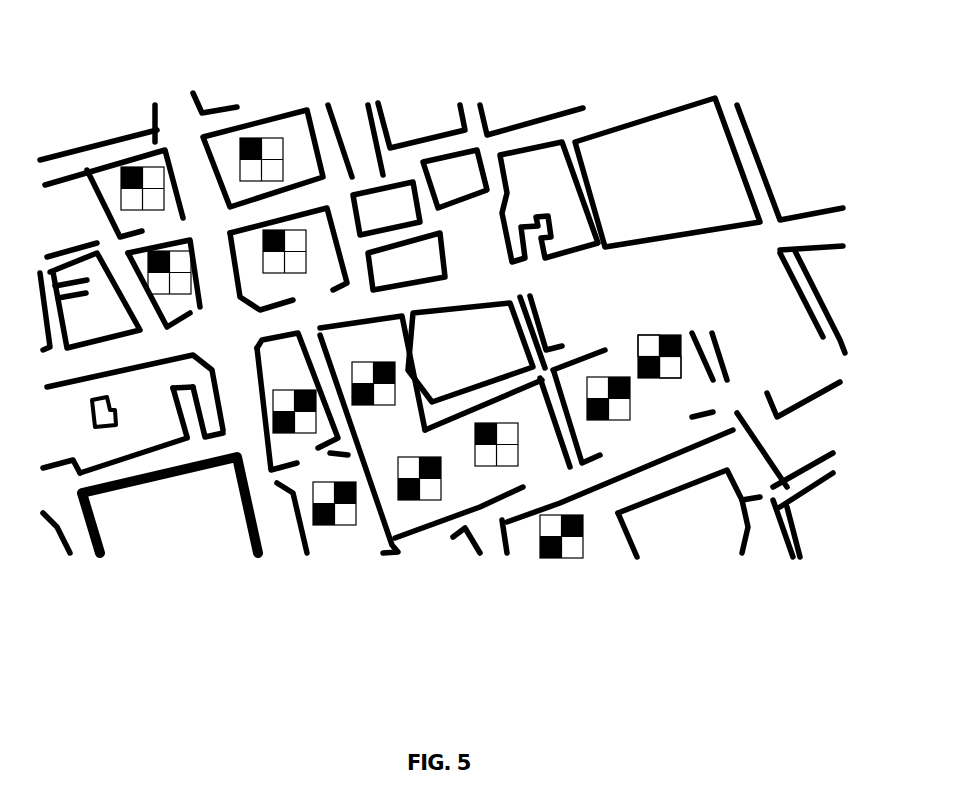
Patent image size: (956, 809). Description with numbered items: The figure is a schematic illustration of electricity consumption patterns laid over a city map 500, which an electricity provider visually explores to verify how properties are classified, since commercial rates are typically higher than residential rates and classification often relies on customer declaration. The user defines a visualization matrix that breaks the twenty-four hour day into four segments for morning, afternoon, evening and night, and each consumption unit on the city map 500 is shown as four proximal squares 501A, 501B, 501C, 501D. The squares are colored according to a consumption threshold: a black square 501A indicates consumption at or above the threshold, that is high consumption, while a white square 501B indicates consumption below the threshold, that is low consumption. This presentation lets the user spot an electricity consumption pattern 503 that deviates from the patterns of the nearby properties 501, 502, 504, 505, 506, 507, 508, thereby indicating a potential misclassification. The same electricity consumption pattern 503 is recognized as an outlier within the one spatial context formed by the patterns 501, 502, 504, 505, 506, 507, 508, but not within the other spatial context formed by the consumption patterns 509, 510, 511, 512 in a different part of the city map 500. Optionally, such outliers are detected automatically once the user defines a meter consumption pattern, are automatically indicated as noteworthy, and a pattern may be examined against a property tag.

The city map 500 is at (653, 602).
The electricity consumption pattern 501 is at (652, 371).
The black square 501A is at (716, 342).
The white square 501B is at (678, 369).
The proximal square 501C is at (640, 368).
The proximal square 501D is at (650, 340).
The electricity consumption pattern 502 is at (610, 423).
The electricity consumption pattern 503 is at (492, 463).
The electricity consumption pattern 504 is at (585, 559).
The electricity consumption pattern 505 is at (421, 511).
The electricity consumption pattern 506 is at (340, 528).
The electricity consumption pattern 507 is at (382, 399).
The electricity consumption pattern 508 is at (303, 426).
The electricity consumption pattern 509 is at (301, 261).
The electricity consumption pattern 510 is at (183, 288).
The electricity consumption pattern 511 is at (276, 171).
The electricity consumption pattern 512 is at (155, 194).